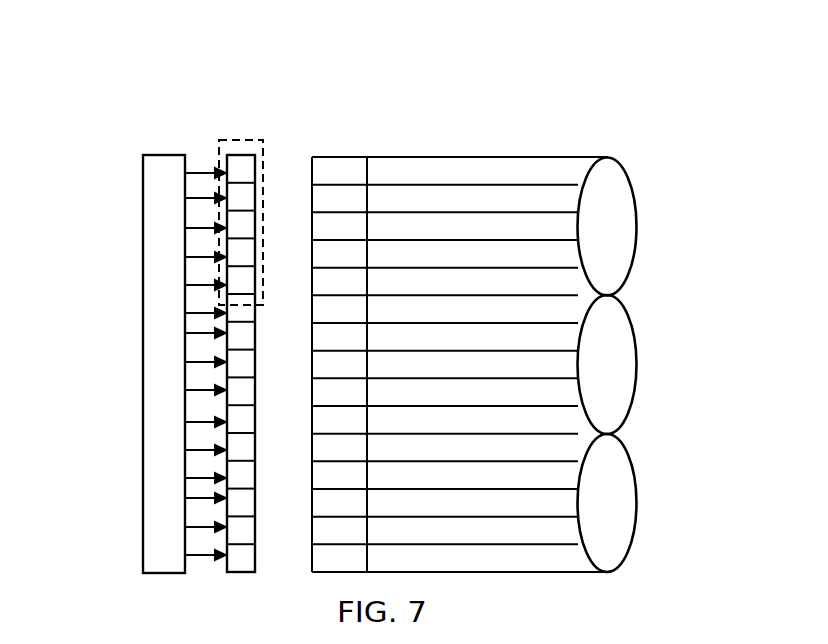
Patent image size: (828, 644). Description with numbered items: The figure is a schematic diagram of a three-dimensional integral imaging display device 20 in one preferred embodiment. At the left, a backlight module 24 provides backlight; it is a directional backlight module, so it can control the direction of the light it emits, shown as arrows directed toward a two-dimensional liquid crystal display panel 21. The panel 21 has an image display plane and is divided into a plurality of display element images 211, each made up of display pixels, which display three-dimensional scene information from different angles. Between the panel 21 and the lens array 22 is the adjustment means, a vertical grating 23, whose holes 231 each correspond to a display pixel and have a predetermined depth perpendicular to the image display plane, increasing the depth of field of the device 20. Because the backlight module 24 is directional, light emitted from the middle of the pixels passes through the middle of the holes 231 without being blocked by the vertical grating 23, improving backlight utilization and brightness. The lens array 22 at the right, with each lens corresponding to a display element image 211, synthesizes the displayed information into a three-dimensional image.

The three-dimensional integral imaging display device 20 is at (162, 85).
The backlight module 24 is at (158, 155).
The two-dimensional liquid crystal display panel 21 is at (242, 157).
The display element image 211 is at (222, 137).
The vertical grating 23 is at (338, 157).
The hole 231 is at (350, 175).
The lens array 22 is at (606, 157).